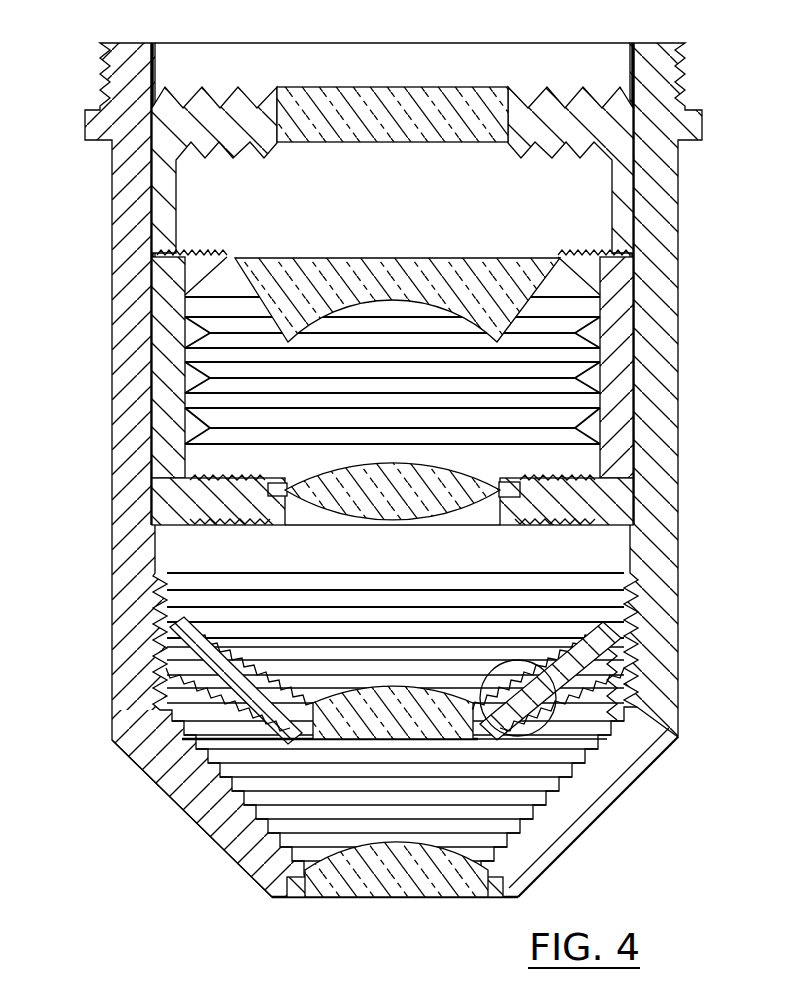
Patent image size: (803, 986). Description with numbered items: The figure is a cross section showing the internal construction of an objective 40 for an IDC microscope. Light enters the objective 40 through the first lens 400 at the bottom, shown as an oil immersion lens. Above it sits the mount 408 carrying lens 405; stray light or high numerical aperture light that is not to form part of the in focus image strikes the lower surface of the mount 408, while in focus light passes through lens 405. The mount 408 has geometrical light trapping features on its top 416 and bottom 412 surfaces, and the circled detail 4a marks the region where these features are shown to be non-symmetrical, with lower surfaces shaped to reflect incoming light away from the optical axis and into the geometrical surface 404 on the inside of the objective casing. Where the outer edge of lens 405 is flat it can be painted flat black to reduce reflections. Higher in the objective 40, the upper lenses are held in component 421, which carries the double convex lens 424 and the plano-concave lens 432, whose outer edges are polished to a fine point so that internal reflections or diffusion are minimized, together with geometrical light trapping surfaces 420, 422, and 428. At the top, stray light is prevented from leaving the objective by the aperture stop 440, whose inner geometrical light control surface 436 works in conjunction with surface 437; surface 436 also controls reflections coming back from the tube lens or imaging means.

The objective 40 is at (680, 283).
The first lens 400 is at (368, 882).
The geometrical surface 404 is at (578, 786).
The lens 405 is at (235, 855).
The mount 408 is at (592, 658).
The bottom surface 412 is at (170, 743).
The top surface 416 is at (236, 672).
The geometrical light trapping surface 420 is at (548, 518).
The component 421 is at (182, 327).
The geometrical light trapping surface 422 is at (185, 468).
The double convex lens 424 is at (372, 500).
The geometrical light trapping surface 428 is at (603, 401).
The plano-concave lens 432 is at (481, 275).
The inner geometrical light control surface 436 is at (580, 88).
The surface 437 is at (205, 256).
The aperture stop 440 is at (455, 95).
The detail 4a is at (490, 736).